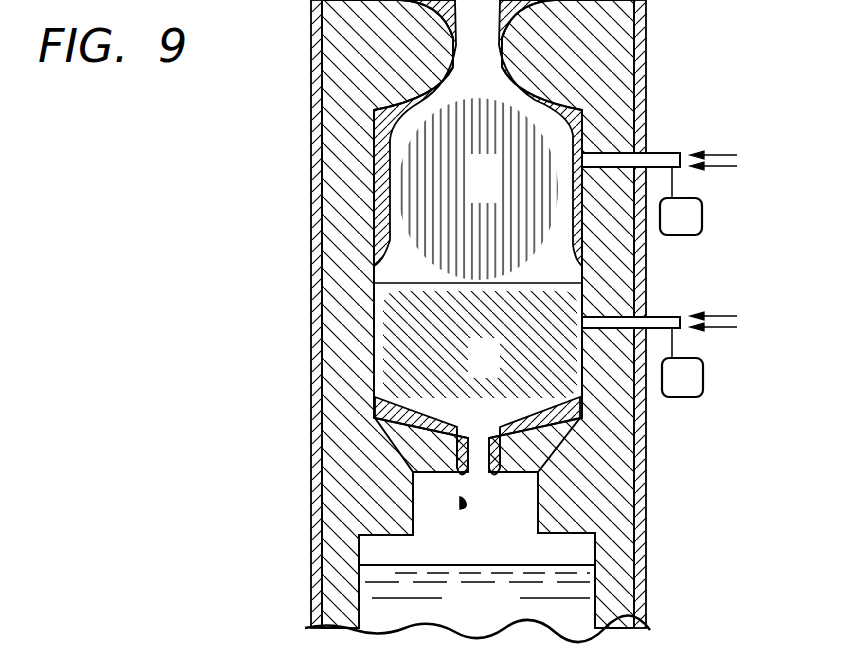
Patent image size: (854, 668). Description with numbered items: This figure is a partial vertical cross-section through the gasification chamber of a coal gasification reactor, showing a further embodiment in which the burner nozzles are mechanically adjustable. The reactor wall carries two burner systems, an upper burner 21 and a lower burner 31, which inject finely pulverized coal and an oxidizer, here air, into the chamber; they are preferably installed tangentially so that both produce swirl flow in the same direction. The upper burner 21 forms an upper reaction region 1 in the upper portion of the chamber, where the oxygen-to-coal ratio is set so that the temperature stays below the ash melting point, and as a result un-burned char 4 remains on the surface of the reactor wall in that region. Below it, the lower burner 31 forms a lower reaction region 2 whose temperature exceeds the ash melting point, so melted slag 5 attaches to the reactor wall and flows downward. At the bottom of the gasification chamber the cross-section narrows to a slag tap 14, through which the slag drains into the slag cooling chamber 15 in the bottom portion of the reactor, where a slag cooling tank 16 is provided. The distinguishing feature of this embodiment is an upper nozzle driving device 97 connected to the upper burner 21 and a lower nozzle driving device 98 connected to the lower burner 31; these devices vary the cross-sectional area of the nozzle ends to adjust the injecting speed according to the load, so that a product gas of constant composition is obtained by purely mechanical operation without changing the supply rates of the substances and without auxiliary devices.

The upper reaction region 1 is at (493, 191).
The lower reaction region 2 is at (497, 371).
The un-burned char 4 is at (548, 100).
The melted slag 5 is at (560, 405).
The slag tap 14 is at (476, 445).
The slag cooling chamber 15 is at (498, 551).
The slag cooling tank 16 is at (504, 617).
The upper burner 21 is at (667, 153).
The lower burner 31 is at (667, 317).
The upper nozzle driving device 97 is at (704, 212).
The lower nozzle driving device 98 is at (705, 368).